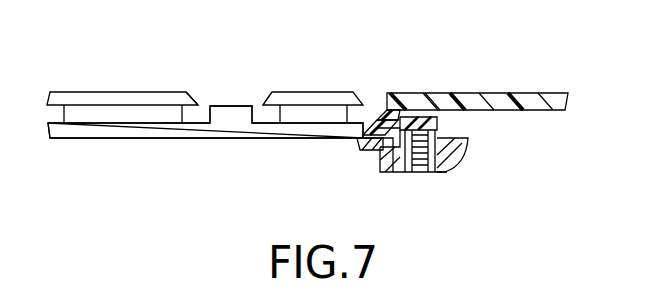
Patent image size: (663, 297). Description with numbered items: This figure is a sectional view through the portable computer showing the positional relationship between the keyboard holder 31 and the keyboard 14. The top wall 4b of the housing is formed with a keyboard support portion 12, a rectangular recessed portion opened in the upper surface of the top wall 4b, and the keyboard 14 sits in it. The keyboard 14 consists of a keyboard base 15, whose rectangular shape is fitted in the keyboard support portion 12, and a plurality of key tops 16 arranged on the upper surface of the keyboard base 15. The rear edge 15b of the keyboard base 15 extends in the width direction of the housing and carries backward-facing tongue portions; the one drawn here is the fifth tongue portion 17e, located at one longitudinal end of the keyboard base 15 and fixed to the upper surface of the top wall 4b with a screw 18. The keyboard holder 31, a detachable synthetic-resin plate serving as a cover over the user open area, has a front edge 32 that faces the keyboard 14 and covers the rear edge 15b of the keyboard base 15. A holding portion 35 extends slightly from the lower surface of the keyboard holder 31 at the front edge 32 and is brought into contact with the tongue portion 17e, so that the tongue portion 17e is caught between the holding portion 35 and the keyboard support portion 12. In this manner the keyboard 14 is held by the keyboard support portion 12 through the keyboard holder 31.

The top wall 4b is at (455, 155).
The keyboard support portion 12 is at (392, 170).
The keyboard 14 is at (128, 90).
The keyboard base 15 is at (112, 134).
The rear edge 15b is at (358, 150).
The key tops 16 is at (270, 102).
The fifth tongue portion 17e is at (428, 108).
The screw 18 is at (437, 122).
The keyboard holder 31 is at (541, 92).
The front edge 32 is at (392, 108).
The holding portion 35 is at (383, 107).